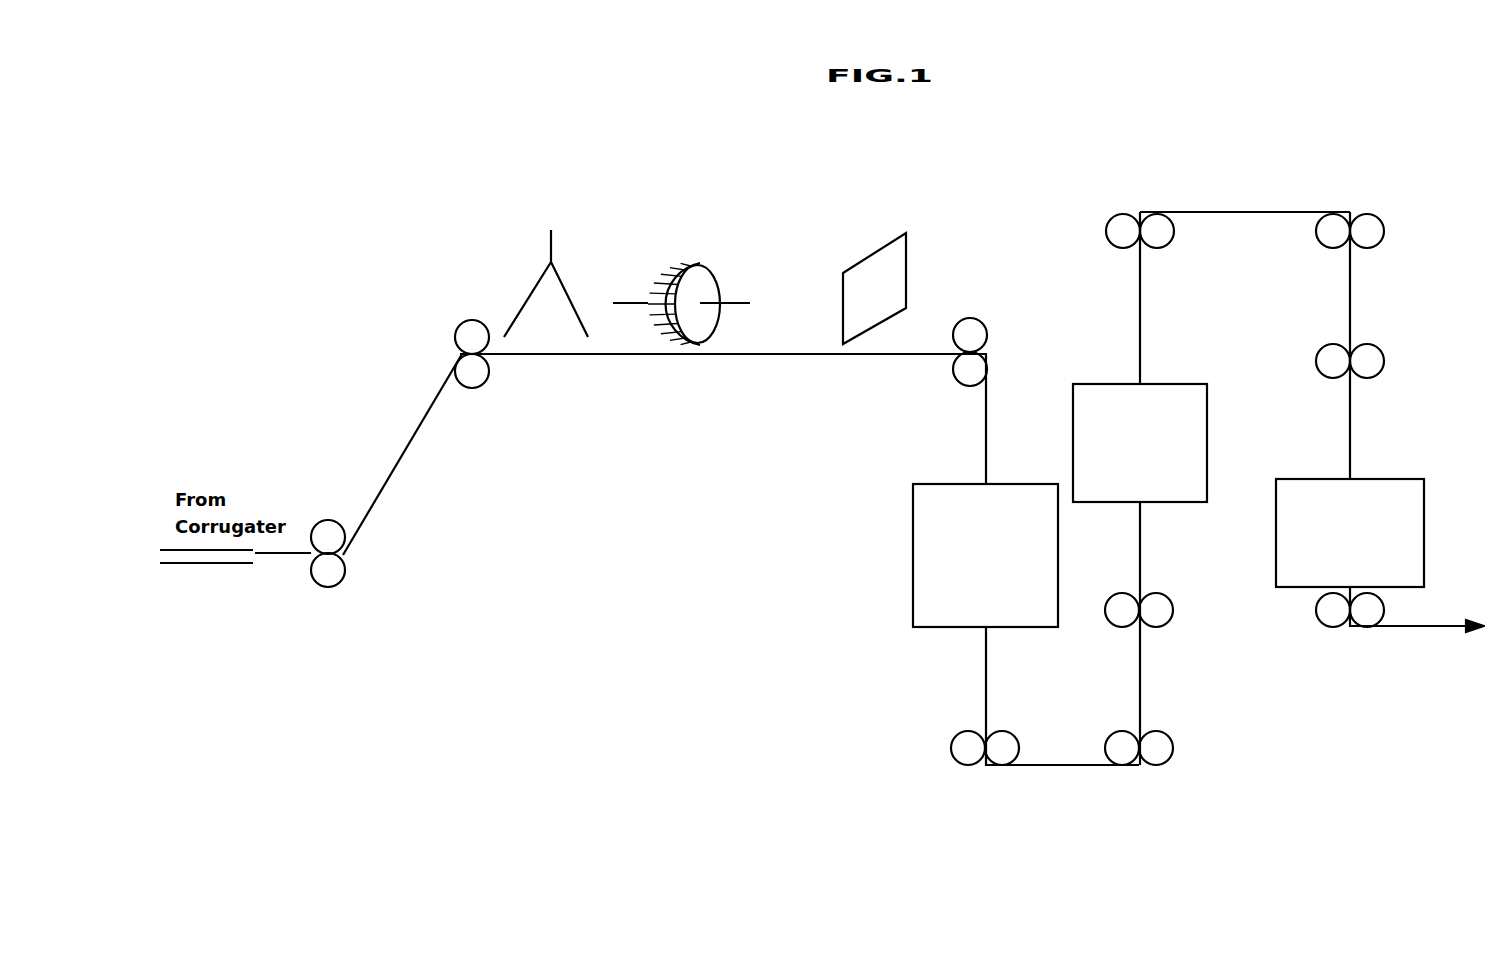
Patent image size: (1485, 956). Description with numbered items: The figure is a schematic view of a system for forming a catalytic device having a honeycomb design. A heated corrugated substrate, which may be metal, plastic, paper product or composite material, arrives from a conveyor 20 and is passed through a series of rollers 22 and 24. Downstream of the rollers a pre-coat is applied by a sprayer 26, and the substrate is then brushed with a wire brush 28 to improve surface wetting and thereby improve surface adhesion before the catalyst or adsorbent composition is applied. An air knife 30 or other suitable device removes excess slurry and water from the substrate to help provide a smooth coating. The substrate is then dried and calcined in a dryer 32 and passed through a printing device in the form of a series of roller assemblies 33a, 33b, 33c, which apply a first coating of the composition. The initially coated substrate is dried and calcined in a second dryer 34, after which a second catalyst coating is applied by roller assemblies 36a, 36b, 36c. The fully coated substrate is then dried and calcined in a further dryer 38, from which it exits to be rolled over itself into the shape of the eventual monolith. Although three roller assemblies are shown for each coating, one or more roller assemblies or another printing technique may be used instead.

The conveyor 20 is at (213, 566).
The rollers 22 is at (346, 568).
The rollers 24 is at (470, 389).
The sprayer 26 is at (551, 240).
The wire brush 28 is at (708, 270).
The air knife 30 is at (874, 288).
The dryer 32 is at (1026, 541).
The roller assembly 33a is at (951, 750).
The roller assembly 33b is at (1174, 750).
The roller assembly 33c is at (1174, 612).
The dryer 34 is at (1140, 488).
The roller assembly 36a is at (1175, 232).
The roller assembly 36b is at (1385, 232).
The roller assembly 36c is at (1385, 362).
The dryer 38 is at (1380, 422).